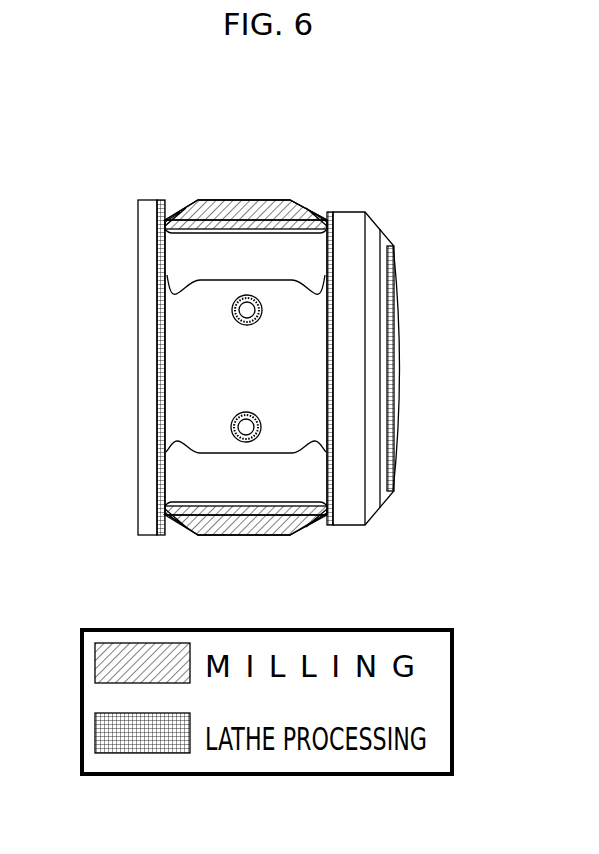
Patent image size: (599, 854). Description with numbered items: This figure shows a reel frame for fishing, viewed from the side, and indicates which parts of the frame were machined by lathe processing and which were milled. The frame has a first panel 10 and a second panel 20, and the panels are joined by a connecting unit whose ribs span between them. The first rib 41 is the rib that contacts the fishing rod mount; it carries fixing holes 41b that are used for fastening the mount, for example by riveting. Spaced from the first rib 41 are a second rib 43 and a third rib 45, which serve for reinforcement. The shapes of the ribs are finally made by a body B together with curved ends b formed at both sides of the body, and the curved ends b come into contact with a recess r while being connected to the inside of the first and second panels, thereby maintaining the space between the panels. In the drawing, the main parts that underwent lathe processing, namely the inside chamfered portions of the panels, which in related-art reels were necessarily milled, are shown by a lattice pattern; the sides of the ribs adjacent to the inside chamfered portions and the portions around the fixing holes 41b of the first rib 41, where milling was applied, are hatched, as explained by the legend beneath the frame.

The first panel 10 is at (400, 217).
The second panel 20 is at (126, 220).
The first rib 41 is at (246, 352).
The fixing holes 41b is at (247, 310).
The second rib 43 is at (245, 537).
The third rib 45 is at (290, 141).
The curved ends b is at (182, 200).
The body B is at (240, 200).
The recess r is at (323, 523).